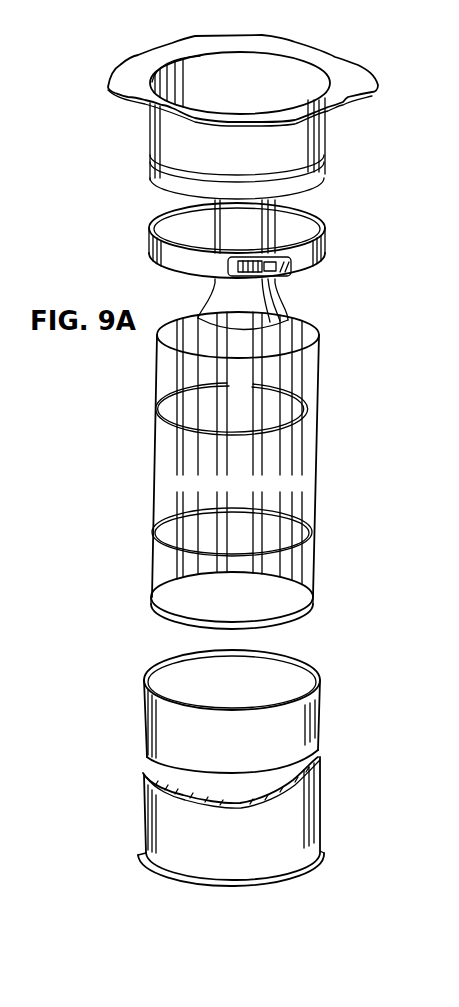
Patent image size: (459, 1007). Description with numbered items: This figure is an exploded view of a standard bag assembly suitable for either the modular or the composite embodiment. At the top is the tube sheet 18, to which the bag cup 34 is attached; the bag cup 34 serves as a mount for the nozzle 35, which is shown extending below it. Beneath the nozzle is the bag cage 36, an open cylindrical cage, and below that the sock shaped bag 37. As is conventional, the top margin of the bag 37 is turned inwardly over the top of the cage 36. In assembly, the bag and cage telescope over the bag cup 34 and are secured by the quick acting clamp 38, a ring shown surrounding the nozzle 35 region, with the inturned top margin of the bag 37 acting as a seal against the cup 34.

The tube sheet 18 is at (128, 82).
The bag cup 34 is at (163, 142).
The nozzle 35 is at (273, 290).
The bag cage 36 is at (155, 438).
The sock shaped bag 37 is at (155, 715).
The quick acting clamp 38 is at (152, 243).